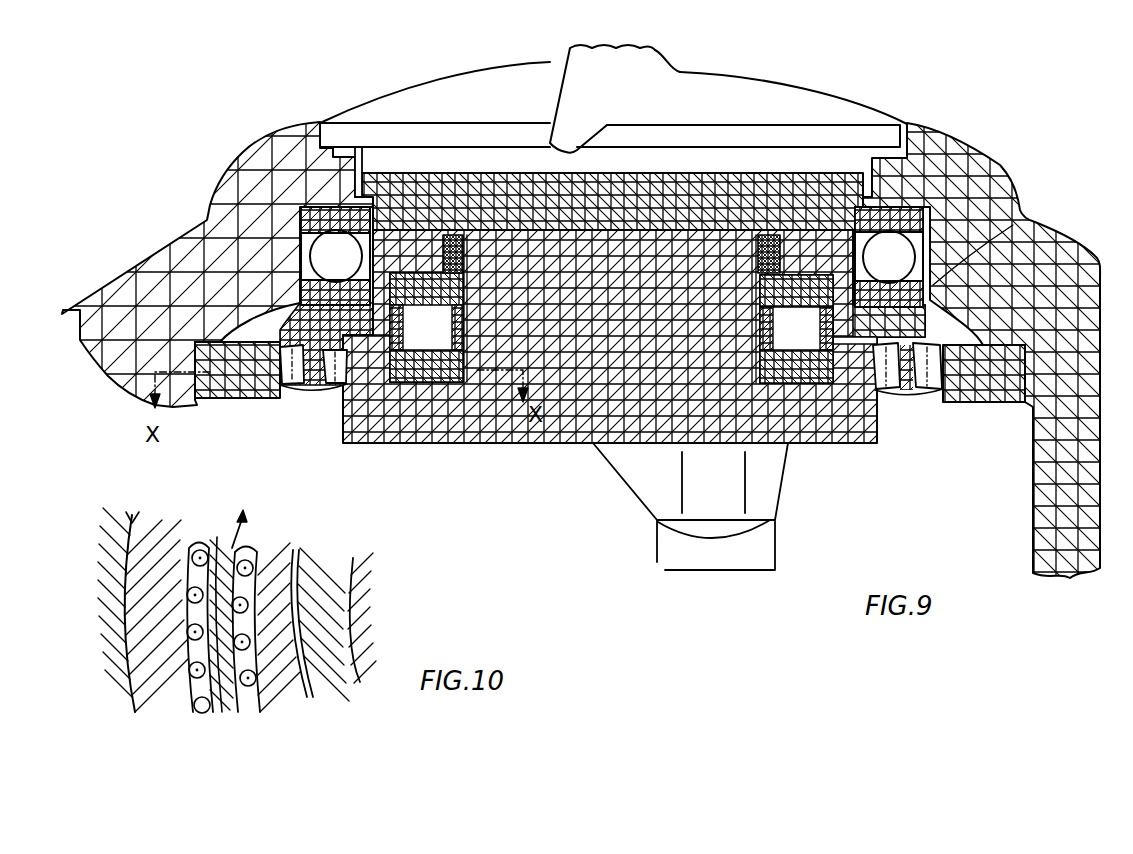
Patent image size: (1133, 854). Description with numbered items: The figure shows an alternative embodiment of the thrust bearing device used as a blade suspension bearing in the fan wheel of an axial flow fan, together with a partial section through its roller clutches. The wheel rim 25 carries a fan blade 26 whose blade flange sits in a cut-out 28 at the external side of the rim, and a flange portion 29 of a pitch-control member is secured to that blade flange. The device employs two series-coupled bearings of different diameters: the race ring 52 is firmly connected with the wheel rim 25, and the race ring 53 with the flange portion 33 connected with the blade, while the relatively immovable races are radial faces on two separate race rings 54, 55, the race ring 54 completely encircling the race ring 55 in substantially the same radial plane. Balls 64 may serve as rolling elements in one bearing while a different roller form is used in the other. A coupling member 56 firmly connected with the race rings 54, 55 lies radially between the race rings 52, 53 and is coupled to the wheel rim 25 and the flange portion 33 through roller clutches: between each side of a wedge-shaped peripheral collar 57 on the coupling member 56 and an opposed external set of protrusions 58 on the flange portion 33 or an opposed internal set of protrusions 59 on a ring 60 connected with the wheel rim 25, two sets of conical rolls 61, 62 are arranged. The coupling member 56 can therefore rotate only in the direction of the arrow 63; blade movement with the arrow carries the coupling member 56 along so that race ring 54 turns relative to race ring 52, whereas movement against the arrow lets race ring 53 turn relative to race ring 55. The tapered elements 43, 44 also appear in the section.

In FIG. 9, the wheel rim 25 is at (968, 162).
In FIG. 9, the fan blade 26 is at (712, 80).
In FIG. 9, the cut-out 28 is at (378, 177).
In FIG. 9, the flange portion 29 is at (362, 150).
In FIG. 9, the flange portion 33 is at (340, 440).
In FIG. 10, the flange portion 33 is at (273, 580).
In FIG. 9, the gear tooth 43 is at (897, 387).
In FIG. 9, the clamp ring 44 is at (937, 370).
In FIG. 9, the race ring 52 is at (897, 213).
In FIG. 9, the race ring 53 is at (818, 373).
In FIG. 10, the race ring 53 is at (350, 563).
In FIG. 9, the race ring 54 is at (1013, 225).
In FIG. 9, the race ring 55 is at (823, 293).
In FIG. 9, the coupling member 56 is at (303, 392).
In FIG. 9, the peripheral collar 57 is at (908, 378).
In FIG. 9, the external set of protrusions 58 is at (333, 387).
In FIG. 10, the external set of protrusions 58 is at (253, 670).
In FIG. 9, the internal set of protrusions 59 is at (298, 355).
In FIG. 10, the internal set of protrusions 59 is at (173, 630).
In FIG. 9, the ring 60 is at (217, 387).
In FIG. 10, the ring 60 is at (150, 535).
In FIG. 10, the conical rolls 61 is at (268, 545).
In FIG. 10, the conical rolls 62 is at (203, 541).
In FIG. 10, the arrow 63 is at (249, 520).
In FIG. 9, the balls 64 is at (323, 242).